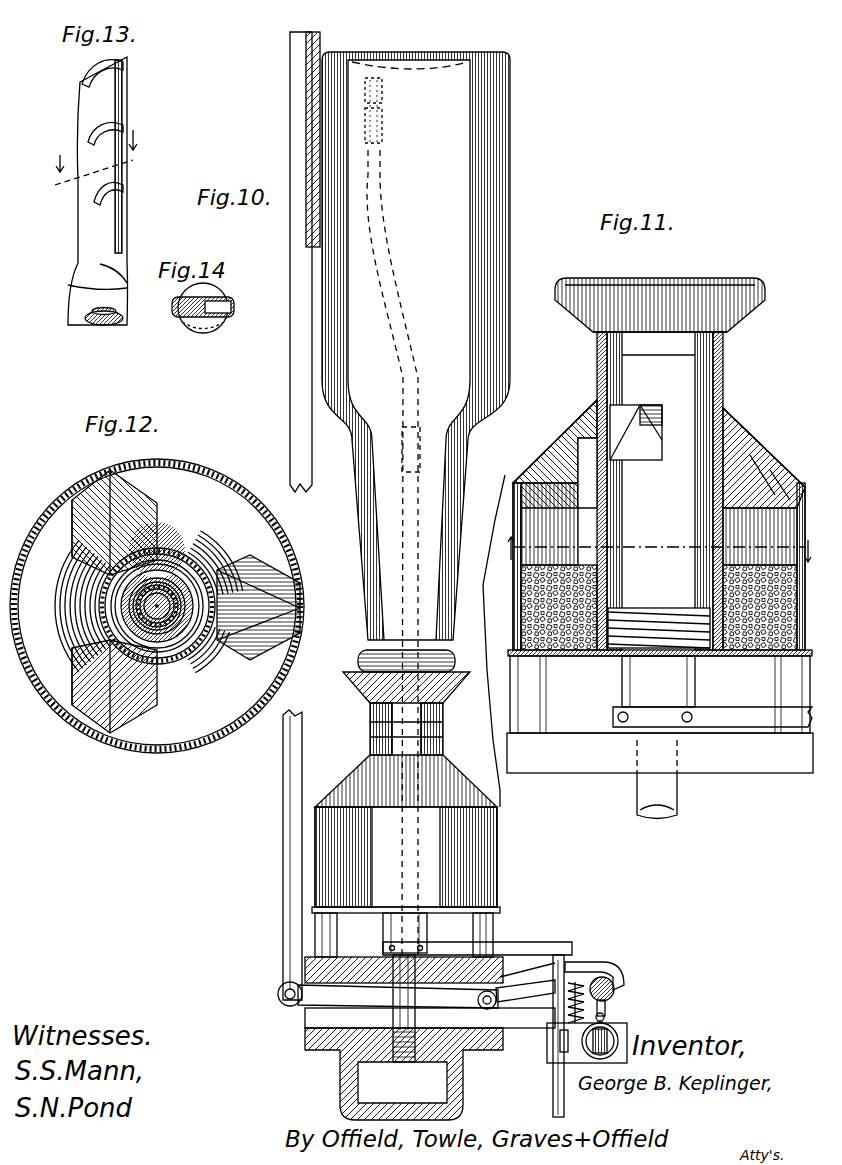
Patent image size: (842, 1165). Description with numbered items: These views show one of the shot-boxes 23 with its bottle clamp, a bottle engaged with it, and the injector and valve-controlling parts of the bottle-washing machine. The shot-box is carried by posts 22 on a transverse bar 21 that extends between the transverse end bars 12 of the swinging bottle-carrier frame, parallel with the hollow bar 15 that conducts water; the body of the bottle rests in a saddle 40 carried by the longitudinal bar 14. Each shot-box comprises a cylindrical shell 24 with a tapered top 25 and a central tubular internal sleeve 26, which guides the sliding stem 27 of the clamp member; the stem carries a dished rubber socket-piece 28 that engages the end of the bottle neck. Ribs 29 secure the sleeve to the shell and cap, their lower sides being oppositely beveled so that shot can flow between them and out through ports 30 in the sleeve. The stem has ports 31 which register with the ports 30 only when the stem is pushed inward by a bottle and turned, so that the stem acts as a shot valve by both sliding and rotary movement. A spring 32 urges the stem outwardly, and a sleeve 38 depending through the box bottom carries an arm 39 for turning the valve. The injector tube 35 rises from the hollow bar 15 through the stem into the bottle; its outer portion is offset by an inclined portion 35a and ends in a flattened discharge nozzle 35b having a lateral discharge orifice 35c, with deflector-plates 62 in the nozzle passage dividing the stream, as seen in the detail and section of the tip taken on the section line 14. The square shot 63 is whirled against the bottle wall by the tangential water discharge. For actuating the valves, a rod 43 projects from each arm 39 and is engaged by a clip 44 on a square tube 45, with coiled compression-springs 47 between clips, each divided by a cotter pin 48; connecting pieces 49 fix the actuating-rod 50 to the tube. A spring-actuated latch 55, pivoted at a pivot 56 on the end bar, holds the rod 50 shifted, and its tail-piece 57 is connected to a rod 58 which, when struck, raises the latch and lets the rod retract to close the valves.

In FIG. 10, the transverse end bars 12 is at (300, 725).
In FIG. 11, the transverse end bars 12 is at (657, 560).
In FIG. 13, the longitudinal bar 14 is at (96, 163).
In FIG. 10, the hollow bar 15 is at (468, 1085).
In FIG. 10, the transverse bar 21 is at (348, 957).
In FIG. 11, the transverse bar 21 is at (745, 773).
In FIG. 10, the posts 22 is at (322, 928).
In FIG. 11, the posts 22 is at (548, 700).
In FIG. 12, the shot-boxes 23 is at (160, 745).
In FIG. 10, the shot-boxes 23 is at (406, 857).
In FIG. 11, the shot-boxes 23 is at (783, 440).
In FIG. 12, the cylindrical shell 24 is at (152, 750).
In FIG. 10, the cylindrical shell 24 is at (500, 858).
In FIG. 11, the cylindrical shell 24 is at (520, 588).
In FIG. 10, the tapered top 25 is at (372, 782).
In FIG. 11, the tapered top 25 is at (580, 438).
In FIG. 12, the tubular internal sleeve 26 is at (183, 556).
In FIG. 11, the tubular internal sleeve 26 is at (730, 388).
In FIG. 12, the sliding stem 27 is at (203, 572).
In FIG. 11, the sliding stem 27 is at (660, 491).
In FIG. 10, the dished rubber socket-piece 28 is at (445, 700).
In FIG. 11, the dished rubber socket-piece 28 is at (760, 287).
In FIG. 12, the ribs 29 is at (102, 497).
In FIG. 11, the ribs 29 is at (575, 470).
In FIG. 11, the ports 30 is at (600, 440).
In FIG. 11, the ports 31 is at (650, 440).
In FIG. 12, the spring 32 is at (170, 630).
In FIG. 11, the spring 32 is at (640, 650).
In FIG. 12, the injector tube 35 is at (190, 640).
In FIG. 10, the injector tube 35 is at (395, 1010).
In FIG. 11, the injector tube 35 is at (640, 795).
In FIG. 10, the inclined portion 35a is at (394, 268).
In FIG. 13, the flattened discharge nozzle 35b is at (82, 115).
In FIG. 14, the flattened discharge nozzle 35b is at (188, 325).
In FIG. 10, the flattened discharge nozzle 35b is at (382, 120).
In FIG. 13, the lateral discharge orifice 35c is at (122, 232).
In FIG. 14, the lateral discharge orifice 35c is at (233, 302).
In FIG. 12, the sleeve 38 is at (163, 648).
In FIG. 10, the sleeve 38 is at (428, 932).
In FIG. 11, the sleeve 38 is at (668, 680).
In FIG. 10, the arm 39 is at (522, 955).
In FIG. 11, the arm 39 is at (766, 728).
In FIG. 10, the saddles 40 is at (305, 148).
In FIG. 10, the rod 43 is at (560, 960).
In FIG. 10, the clip 44 is at (542, 1083).
In FIG. 10, the square tube 45 is at (614, 1049).
In FIG. 10, the coiled compression-springs 47 is at (628, 1032).
In FIG. 10, the cotter pin 48 is at (608, 1020).
In FIG. 10, the connecting pieces 49 is at (616, 991).
In FIG. 10, the actuating-rod 50 is at (608, 968).
In FIG. 10, the spring-actuated latch 55 is at (578, 975).
In FIG. 10, the pivot 56 is at (497, 990).
In FIG. 10, the tail-piece 57 is at (352, 998).
In FIG. 10, the rod 58 is at (290, 850).
In FIG. 13, the deflector-plates 62 is at (126, 66).
In FIG. 14, the deflector-plates 62 is at (233, 315).
In FIG. 11, the square shot 63 is at (575, 568).